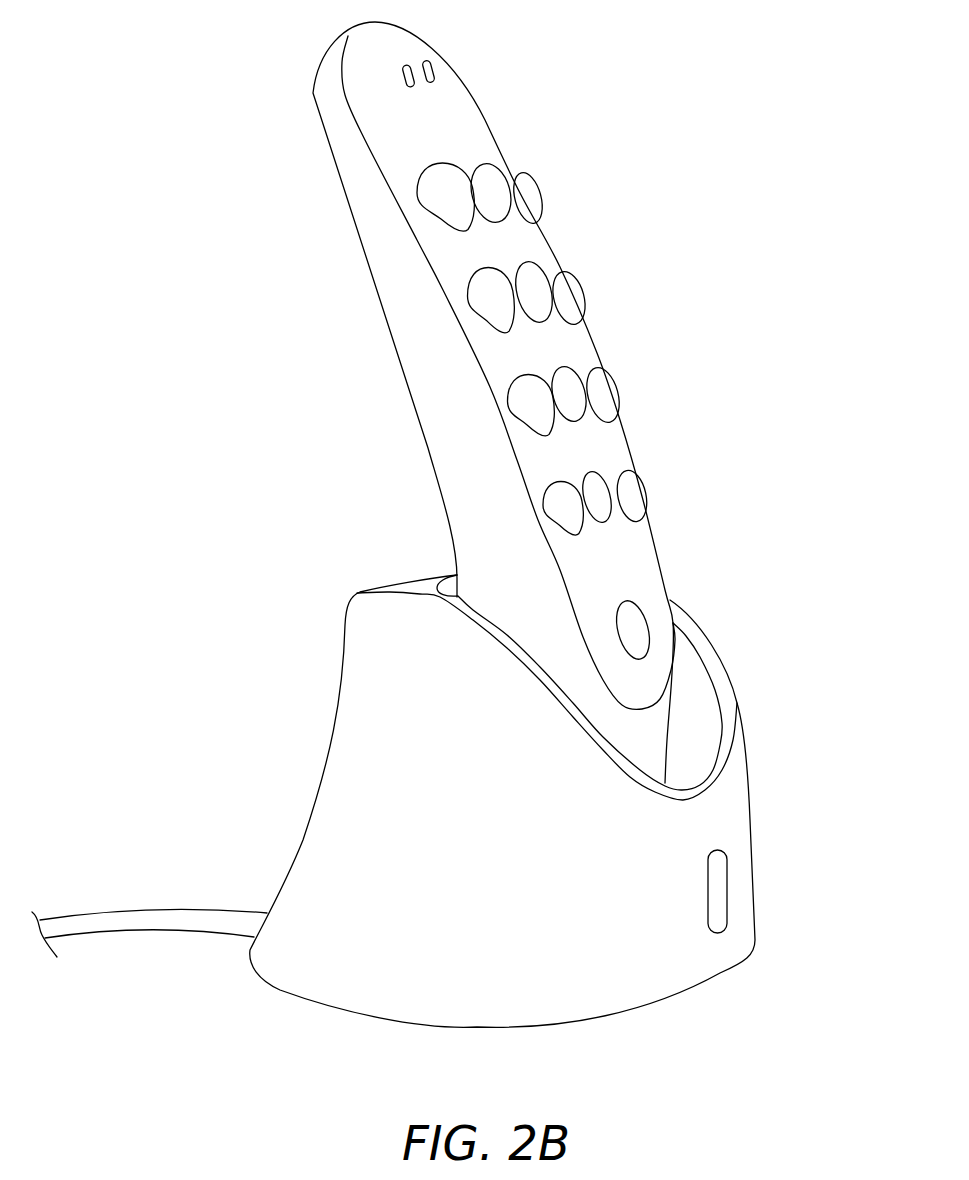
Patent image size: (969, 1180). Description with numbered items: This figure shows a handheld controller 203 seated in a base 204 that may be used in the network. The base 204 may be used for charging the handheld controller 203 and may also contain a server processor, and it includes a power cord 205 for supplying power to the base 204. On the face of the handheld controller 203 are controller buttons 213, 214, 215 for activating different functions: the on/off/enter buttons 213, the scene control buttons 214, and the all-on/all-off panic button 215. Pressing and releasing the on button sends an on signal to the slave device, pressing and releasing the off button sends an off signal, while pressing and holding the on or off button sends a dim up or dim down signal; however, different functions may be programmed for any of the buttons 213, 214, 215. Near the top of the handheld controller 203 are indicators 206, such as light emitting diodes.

The handheld controller 203 is at (684, 427).
The base 204 is at (798, 840).
The power cord 205 is at (153, 910).
The indicators 206 is at (433, 63).
The on/off/enter buttons 213 is at (536, 193).
The scene control buttons 214 is at (646, 492).
The all-on/all-off panic button 215 is at (638, 603).